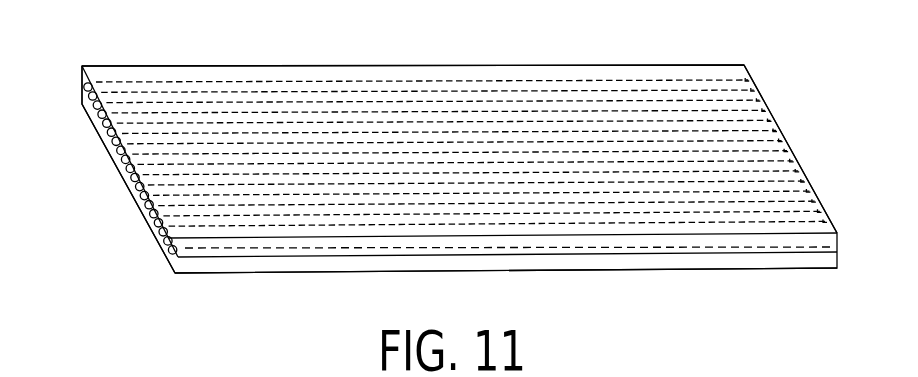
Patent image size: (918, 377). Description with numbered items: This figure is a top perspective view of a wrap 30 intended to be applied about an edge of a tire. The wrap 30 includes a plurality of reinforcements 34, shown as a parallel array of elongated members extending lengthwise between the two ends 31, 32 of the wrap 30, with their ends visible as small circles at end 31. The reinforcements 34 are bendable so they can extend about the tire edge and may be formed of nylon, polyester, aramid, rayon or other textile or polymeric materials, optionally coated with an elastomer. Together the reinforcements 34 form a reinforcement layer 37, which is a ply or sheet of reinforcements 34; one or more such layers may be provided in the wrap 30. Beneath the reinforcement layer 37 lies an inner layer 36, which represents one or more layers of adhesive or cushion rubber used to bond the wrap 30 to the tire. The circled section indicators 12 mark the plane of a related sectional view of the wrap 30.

The wrap 30 is at (116, 48).
The section line 12 is at (334, 57).
The reinforcement layer 37 is at (744, 66).
The end 32 is at (804, 176).
The reinforcements 34 is at (115, 140).
The end 31 is at (145, 218).
The inner layer 36 is at (228, 265).